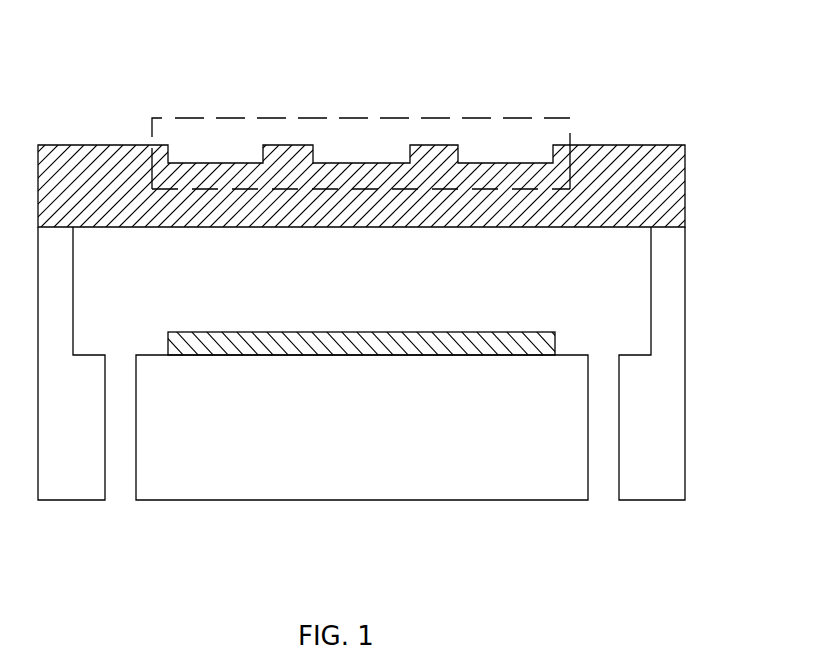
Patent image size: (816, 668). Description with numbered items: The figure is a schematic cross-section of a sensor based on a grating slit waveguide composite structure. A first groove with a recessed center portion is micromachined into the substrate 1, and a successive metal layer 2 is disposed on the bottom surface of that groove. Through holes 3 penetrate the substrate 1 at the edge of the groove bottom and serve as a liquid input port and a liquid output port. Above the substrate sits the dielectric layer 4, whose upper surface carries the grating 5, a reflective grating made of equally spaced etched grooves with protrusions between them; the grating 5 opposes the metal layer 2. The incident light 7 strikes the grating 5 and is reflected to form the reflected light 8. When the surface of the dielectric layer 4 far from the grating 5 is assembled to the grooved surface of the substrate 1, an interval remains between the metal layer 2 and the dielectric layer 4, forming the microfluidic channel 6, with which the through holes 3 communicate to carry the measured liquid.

The substrate 1 is at (200, 452).
The successive metal layer 2 is at (473, 339).
The through holes 3 is at (118, 452).
The dielectric layer 4 is at (137, 175).
The grating 5 is at (538, 15).
The microfluidic channel 6 is at (280, 282).
The incident light 7 is at (232, 32).
The reflected light 8 is at (410, 118).